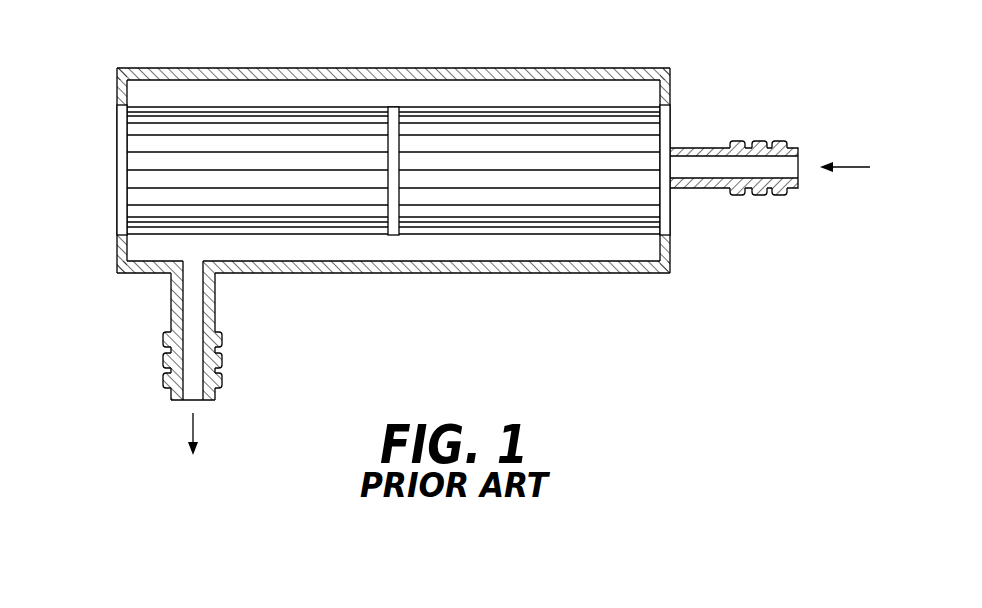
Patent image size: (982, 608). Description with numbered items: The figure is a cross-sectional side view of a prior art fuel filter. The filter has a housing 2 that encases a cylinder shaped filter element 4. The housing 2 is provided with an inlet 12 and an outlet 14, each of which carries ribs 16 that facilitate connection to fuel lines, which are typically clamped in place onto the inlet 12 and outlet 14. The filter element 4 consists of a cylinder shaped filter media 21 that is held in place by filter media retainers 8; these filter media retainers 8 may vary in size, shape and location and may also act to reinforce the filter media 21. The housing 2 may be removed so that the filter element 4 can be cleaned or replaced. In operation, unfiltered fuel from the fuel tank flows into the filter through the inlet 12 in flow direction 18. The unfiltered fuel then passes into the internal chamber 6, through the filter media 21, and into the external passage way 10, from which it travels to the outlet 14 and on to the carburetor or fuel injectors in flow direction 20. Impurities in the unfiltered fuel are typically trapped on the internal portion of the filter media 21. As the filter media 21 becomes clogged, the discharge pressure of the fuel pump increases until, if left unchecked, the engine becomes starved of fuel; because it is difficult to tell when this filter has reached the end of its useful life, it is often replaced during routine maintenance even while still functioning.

The housing 2 is at (198, 68).
The filter element 4 is at (497, 213).
The internal chamber 6 is at (177, 138).
The filter media retainers 8 is at (398, 128).
The external passage way 10 is at (345, 83).
The inlet 12 is at (705, 165).
The outlet 14 is at (171, 303).
The ribs 16 is at (220, 368).
The flow direction 18 is at (851, 167).
The flow direction 20 is at (193, 423).
The filter media 21 is at (528, 108).